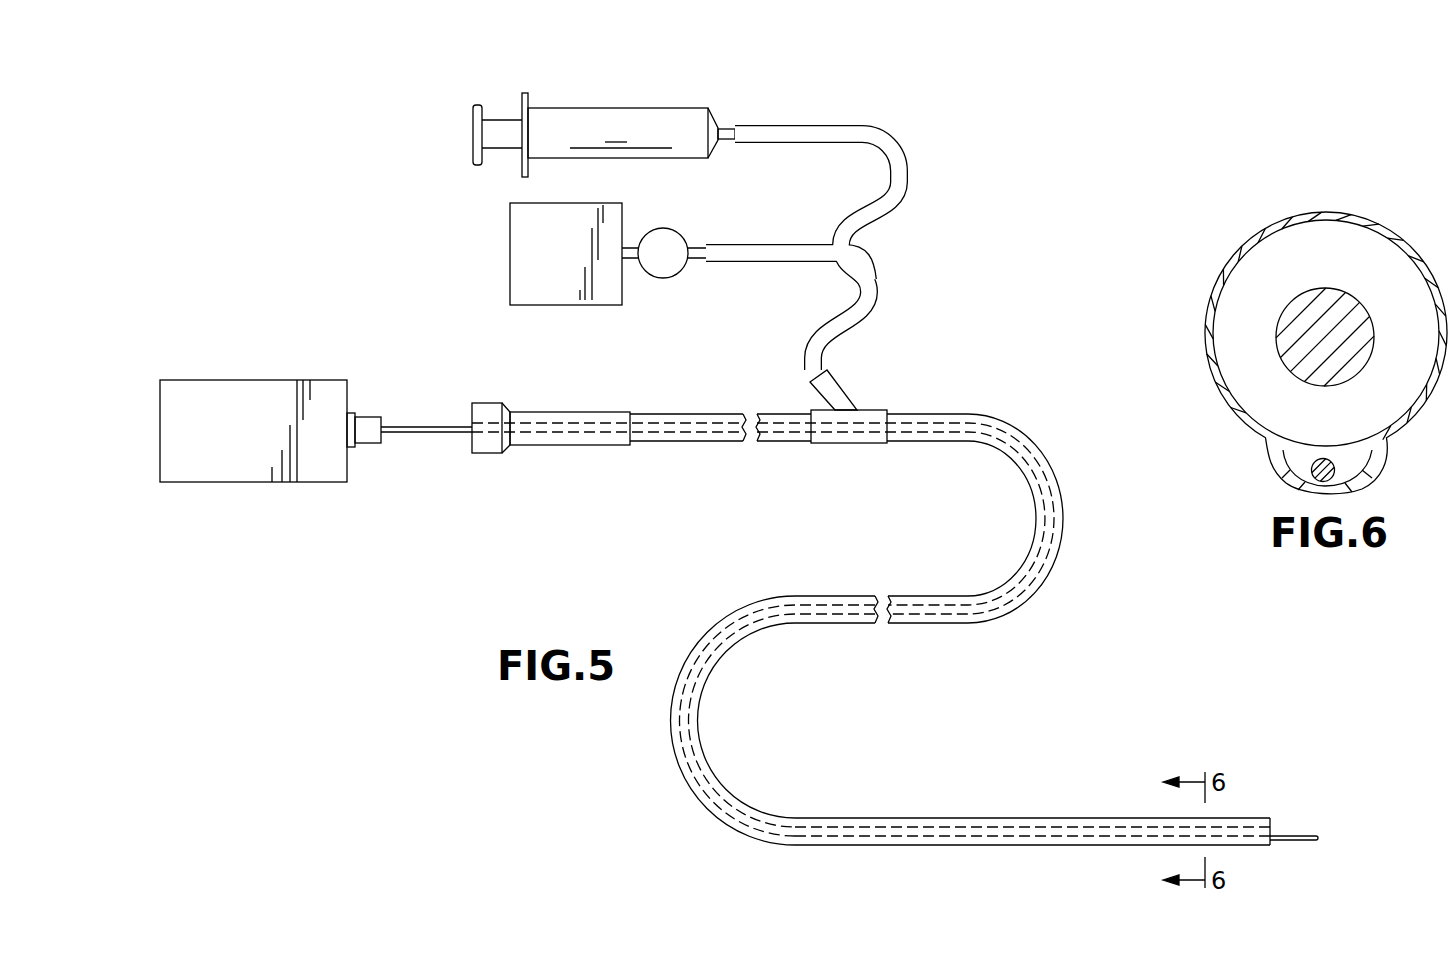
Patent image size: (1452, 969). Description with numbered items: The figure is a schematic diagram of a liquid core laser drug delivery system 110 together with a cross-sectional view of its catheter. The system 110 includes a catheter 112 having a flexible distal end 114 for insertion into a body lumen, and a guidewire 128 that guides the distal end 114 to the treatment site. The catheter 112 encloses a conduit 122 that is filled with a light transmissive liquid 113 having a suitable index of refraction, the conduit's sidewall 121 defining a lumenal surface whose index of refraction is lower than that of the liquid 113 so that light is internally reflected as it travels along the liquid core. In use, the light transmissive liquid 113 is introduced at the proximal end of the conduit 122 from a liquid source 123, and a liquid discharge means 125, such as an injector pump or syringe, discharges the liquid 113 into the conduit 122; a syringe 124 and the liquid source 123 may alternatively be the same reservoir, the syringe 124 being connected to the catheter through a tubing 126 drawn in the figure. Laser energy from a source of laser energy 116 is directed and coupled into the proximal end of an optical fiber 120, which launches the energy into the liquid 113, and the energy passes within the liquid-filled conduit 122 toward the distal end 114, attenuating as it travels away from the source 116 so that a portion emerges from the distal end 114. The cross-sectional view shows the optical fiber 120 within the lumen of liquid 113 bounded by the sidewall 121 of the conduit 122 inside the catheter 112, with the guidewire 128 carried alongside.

In FIG. 5, the system 110 is at (603, 529).
In FIG. 5, the catheter 112 is at (1064, 512).
In FIG. 6, the catheter 112 is at (1227, 268).
In FIG. 6, the light transmissive liquid 113 is at (1347, 430).
In FIG. 5, the distal end 114 is at (1270, 818).
In FIG. 5, the source of laser energy 116 is at (233, 380).
In FIG. 5, the optical fiber 120 is at (1005, 846).
In FIG. 6, the optical fiber 120 is at (1275, 337).
In FIG. 6, the sidewall 121 is at (1288, 237).
In FIG. 5, the conduit 122 is at (880, 818).
In FIG. 6, the conduit 122 is at (1393, 265).
In FIG. 5, the liquid source 123 is at (562, 305).
In FIG. 5, the syringe 124 is at (604, 107).
In FIG. 5, the liquid discharge means 125 is at (661, 279).
In FIG. 5, the tubing 126 is at (907, 168).
In FIG. 5, the guidewire 128 is at (1297, 846).
In FIG. 6, the guidewire 128 is at (1362, 464).